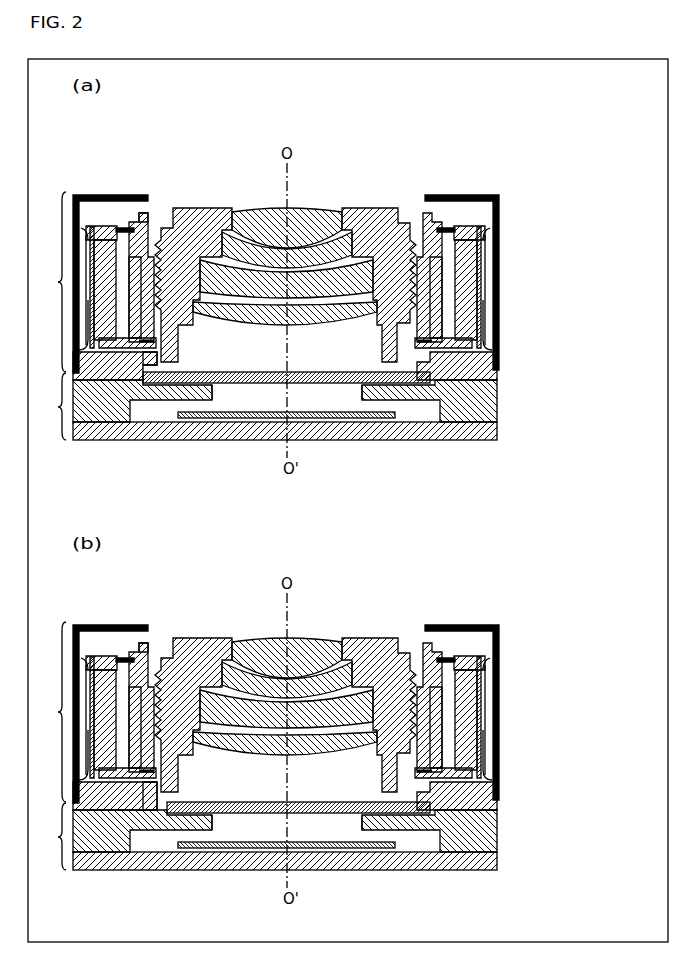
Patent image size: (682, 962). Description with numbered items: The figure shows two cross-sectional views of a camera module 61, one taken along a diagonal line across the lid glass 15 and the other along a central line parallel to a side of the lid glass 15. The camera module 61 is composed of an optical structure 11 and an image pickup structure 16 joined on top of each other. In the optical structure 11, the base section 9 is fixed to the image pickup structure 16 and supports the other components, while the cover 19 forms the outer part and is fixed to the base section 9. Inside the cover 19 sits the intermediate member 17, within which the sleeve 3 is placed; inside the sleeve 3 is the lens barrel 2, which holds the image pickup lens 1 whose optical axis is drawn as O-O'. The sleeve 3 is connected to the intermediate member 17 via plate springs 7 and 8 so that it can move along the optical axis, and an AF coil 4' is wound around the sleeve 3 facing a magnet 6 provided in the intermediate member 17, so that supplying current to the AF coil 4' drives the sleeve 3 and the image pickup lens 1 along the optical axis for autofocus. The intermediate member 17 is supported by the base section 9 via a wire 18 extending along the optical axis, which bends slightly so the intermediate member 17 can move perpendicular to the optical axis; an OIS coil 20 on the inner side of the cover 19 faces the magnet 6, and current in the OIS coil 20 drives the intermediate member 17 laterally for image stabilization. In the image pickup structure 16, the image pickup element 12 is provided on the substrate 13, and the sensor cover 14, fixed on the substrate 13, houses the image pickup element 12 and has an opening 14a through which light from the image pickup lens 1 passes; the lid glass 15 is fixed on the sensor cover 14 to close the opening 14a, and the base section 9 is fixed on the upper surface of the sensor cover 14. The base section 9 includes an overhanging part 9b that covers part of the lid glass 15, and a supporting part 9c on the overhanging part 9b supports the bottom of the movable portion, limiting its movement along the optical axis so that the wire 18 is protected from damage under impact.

The image pickup lens 1 is at (305, 430).
The lens barrel 2 is at (289, 472).
The sleeve 3 is at (326, 449).
The AF coil 4' is at (366, 504).
The magnet 6 is at (344, 505).
The plate spring 7 is at (370, 406).
The plate spring 8 is at (357, 504).
The base section 9 is at (353, 637).
The overhanging part 9b is at (153, 637).
The supporting part 9c is at (185, 430).
The optical structure 11 is at (344, 454).
The image pickup element 12 is at (310, 676).
The substrate 13 is at (319, 675).
The sensor cover 14 is at (364, 639).
The opening 14a is at (326, 641).
The lid glass 15 is at (286, 637).
The image pickup structure 16 is at (349, 648).
The intermediate member 17 is at (365, 478).
The wire 18 is at (328, 497).
The cover 19 is at (332, 499).
The OIS coil 20 is at (349, 502).
The camera module 61 is at (349, 511).